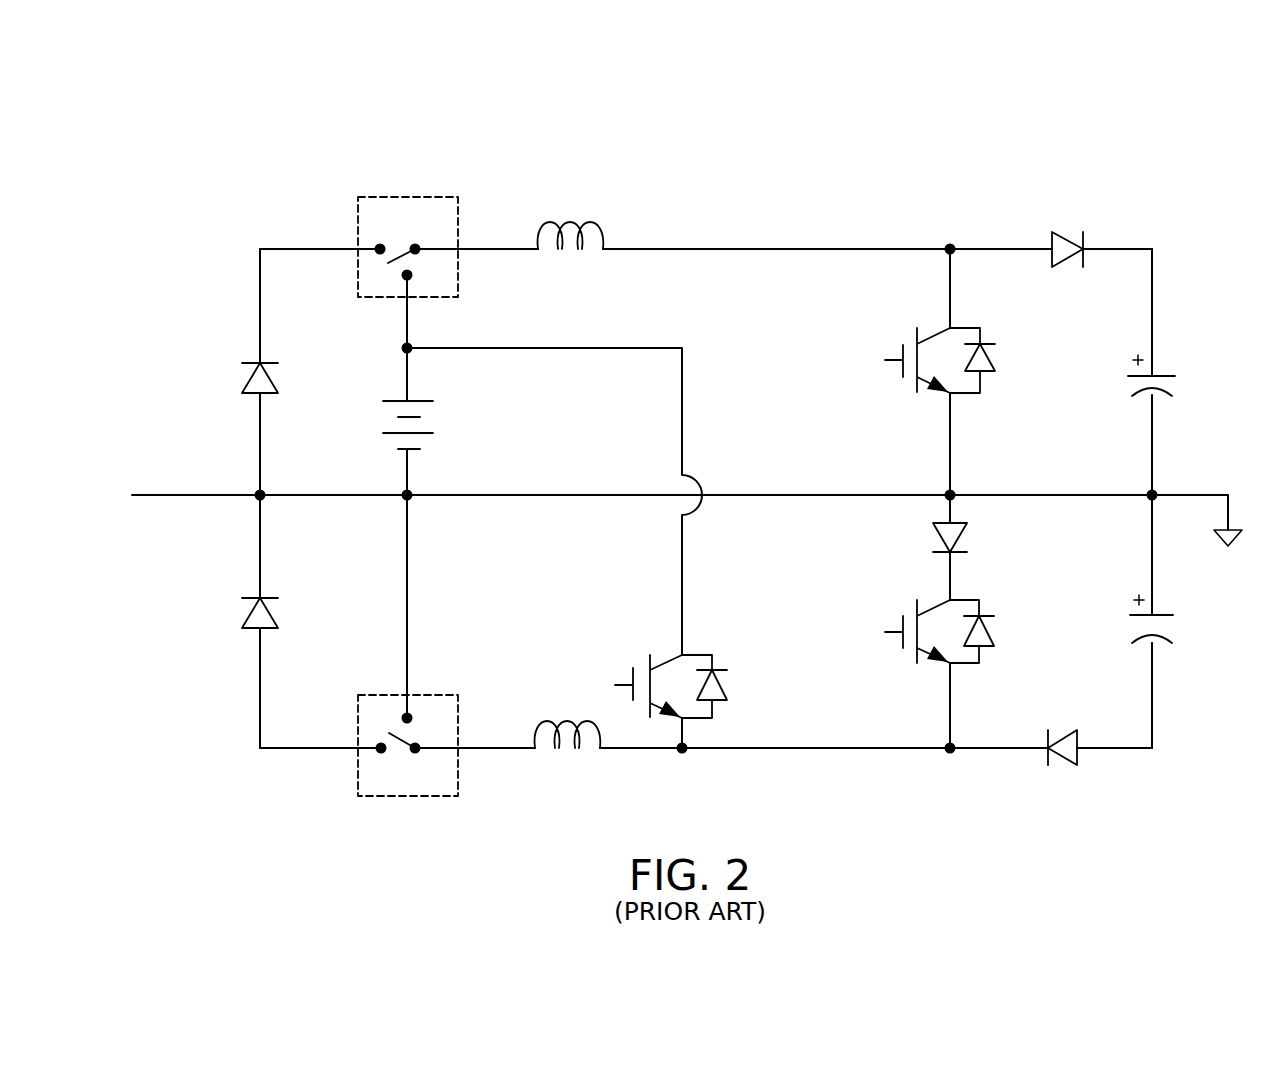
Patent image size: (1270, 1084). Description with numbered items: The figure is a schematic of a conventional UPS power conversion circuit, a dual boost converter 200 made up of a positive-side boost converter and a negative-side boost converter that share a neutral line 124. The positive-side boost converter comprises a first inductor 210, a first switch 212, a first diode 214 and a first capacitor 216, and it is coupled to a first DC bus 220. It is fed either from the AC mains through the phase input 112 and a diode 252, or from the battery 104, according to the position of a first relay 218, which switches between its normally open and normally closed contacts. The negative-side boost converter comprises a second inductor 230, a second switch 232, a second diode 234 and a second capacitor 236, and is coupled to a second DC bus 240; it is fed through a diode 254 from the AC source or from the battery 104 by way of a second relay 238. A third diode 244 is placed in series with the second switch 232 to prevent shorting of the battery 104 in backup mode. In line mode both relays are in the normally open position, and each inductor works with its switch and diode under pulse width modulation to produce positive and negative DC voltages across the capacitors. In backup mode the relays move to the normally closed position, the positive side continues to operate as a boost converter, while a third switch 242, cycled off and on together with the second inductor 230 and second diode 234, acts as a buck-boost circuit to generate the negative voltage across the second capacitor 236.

The dual boost converter 200 is at (855, 174).
The first relay 218 is at (420, 197).
The first inductor 210 is at (590, 222).
The first diode 214 is at (1085, 242).
The first DC bus 220 is at (1152, 275).
The first switch 212 is at (917, 330).
The diode 252 is at (258, 362).
The battery 104 is at (425, 400).
The first capacitor 216 is at (1168, 392).
The neutral line 124 is at (514, 495).
The phase input 112 is at (195, 497).
The third diode 244 is at (965, 553).
The third switch 242 is at (650, 655).
The diode 254 is at (253, 630).
The second capacitor 236 is at (1170, 639).
The second switch 232 is at (917, 664).
The second inductor 230 is at (578, 753).
The second relay 238 is at (405, 796).
The second diode 234 is at (1046, 760).
The second DC bus 240 is at (1152, 717).